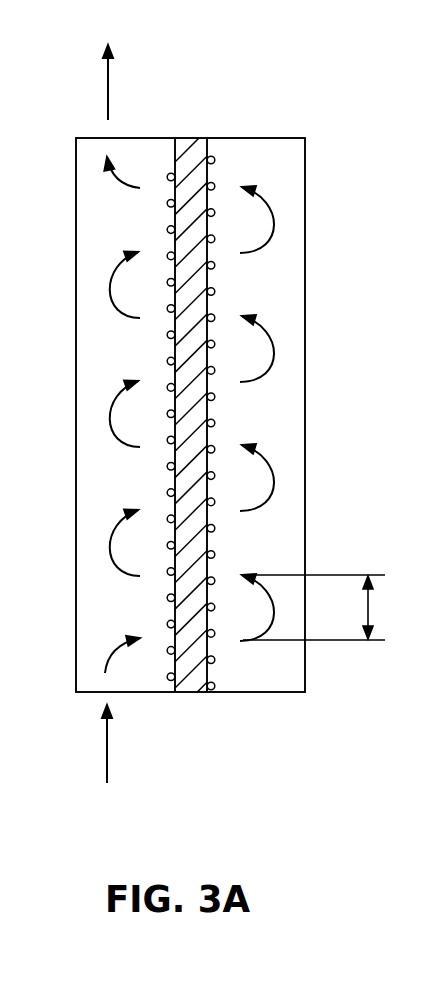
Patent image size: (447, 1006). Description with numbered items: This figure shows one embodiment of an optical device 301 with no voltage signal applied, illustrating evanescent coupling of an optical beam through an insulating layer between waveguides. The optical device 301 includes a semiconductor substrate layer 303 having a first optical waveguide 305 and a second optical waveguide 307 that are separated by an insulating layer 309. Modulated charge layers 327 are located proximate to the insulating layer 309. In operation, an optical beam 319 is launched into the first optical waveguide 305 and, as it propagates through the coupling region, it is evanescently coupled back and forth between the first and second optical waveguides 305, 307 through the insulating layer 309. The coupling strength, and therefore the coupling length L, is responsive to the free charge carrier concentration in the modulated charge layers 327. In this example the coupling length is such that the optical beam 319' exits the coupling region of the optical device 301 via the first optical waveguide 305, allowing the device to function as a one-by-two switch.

The optical device 301 is at (303, 21).
The semiconductor substrate layer 303 is at (305, 155).
The first optical waveguide 305 is at (78, 419).
The second optical waveguide 307 is at (297, 409).
The insulating layer 309 is at (191, 136).
The optical beam 319 is at (77, 744).
The optical beam 319' is at (136, 82).
The modulated charge layers 327 is at (167, 700).